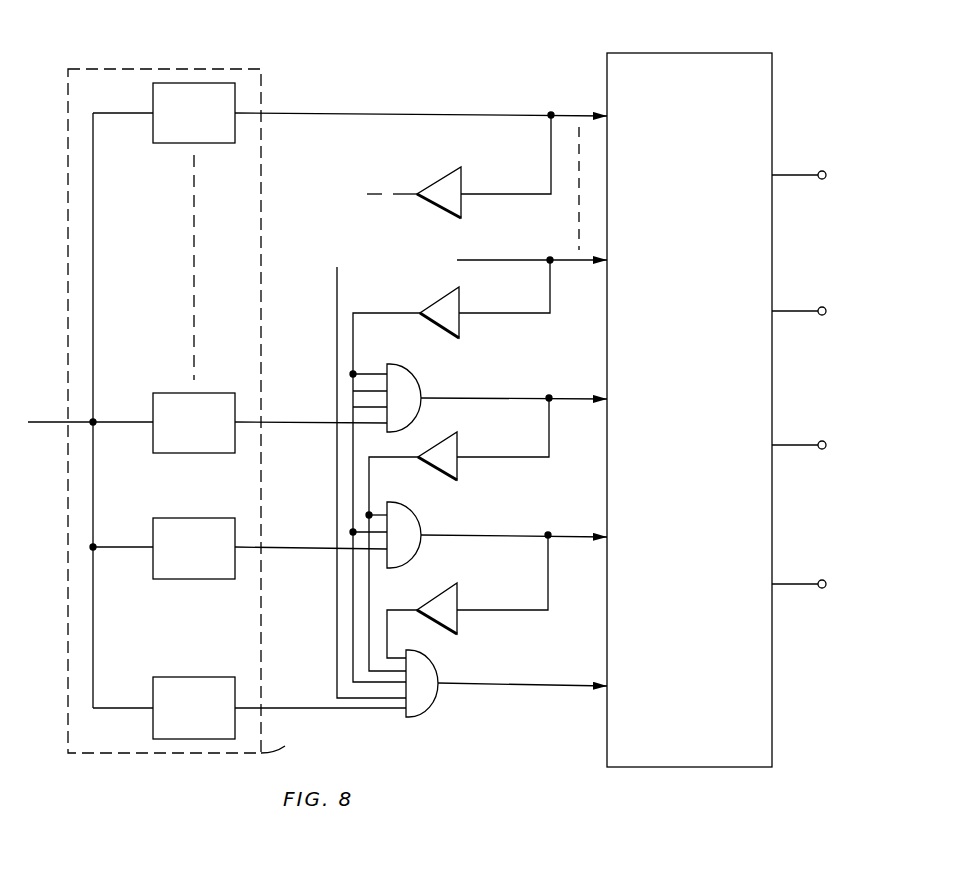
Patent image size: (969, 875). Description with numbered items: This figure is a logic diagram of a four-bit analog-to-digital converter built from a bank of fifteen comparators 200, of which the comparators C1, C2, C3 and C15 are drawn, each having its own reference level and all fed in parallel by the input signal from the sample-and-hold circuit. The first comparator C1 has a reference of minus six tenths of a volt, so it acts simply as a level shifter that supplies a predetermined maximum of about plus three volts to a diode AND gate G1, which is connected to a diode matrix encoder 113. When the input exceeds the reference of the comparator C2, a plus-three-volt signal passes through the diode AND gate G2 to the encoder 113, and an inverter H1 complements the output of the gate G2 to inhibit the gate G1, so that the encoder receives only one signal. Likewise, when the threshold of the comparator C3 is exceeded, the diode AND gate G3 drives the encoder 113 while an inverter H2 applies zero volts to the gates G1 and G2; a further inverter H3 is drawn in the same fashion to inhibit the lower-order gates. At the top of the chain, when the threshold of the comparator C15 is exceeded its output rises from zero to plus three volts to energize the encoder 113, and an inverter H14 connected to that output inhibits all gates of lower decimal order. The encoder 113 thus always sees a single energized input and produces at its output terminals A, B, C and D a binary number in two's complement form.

The comparators 200 is at (183, 68).
The diode matrix encoder 113 is at (705, 63).
The comparator C15 is at (350, 113).
The comparator C3 is at (270, 423).
The comparator C2 is at (240, 548).
The comparator C1 is at (249, 708).
The inverter H14 is at (461, 210).
The inverter H3 is at (463, 334).
The inverter H2 is at (460, 446).
The inverter H1 is at (462, 594).
The diode AND gate G3 is at (414, 383).
The diode AND gate G2 is at (417, 525).
The diode AND gate G1 is at (427, 668).
The output terminal A is at (802, 165).
The output terminal B is at (802, 302).
The output terminal C is at (800, 433).
The output terminal D is at (804, 575).